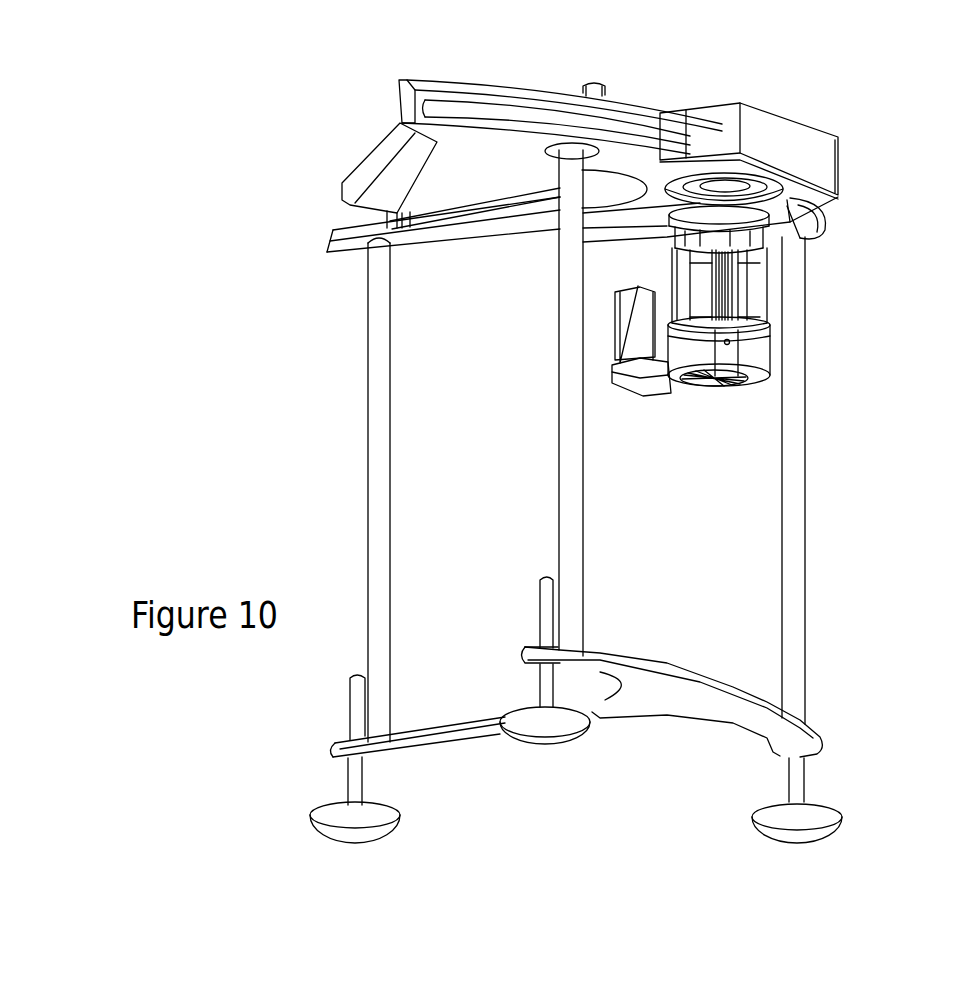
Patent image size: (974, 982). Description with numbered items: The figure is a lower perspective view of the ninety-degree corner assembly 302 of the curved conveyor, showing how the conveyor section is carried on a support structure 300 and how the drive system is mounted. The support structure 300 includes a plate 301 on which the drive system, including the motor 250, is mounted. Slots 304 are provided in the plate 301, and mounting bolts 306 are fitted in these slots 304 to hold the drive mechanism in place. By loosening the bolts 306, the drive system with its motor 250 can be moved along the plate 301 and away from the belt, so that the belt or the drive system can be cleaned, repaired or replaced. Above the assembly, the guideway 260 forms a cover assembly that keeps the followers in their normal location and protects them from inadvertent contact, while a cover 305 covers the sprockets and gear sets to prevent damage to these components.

The motor 250 is at (713, 392).
The guideway 260 is at (510, 88).
The support structure 300 is at (794, 504).
The plate 301 is at (790, 186).
The corner assembly 302 is at (257, 405).
The slots 304 is at (867, 168).
The cover 305 is at (792, 132).
The mounting bolts 306 is at (733, 78).